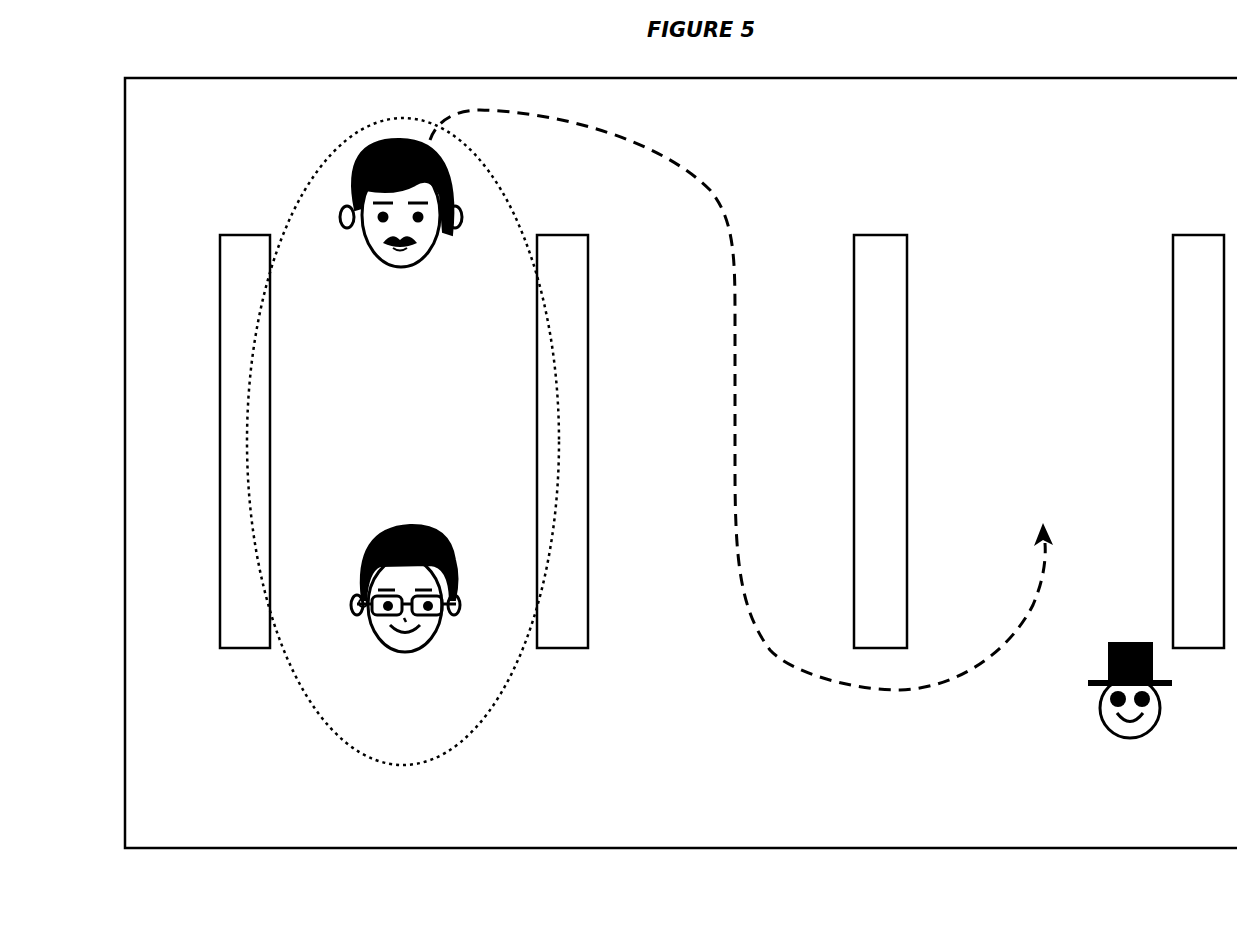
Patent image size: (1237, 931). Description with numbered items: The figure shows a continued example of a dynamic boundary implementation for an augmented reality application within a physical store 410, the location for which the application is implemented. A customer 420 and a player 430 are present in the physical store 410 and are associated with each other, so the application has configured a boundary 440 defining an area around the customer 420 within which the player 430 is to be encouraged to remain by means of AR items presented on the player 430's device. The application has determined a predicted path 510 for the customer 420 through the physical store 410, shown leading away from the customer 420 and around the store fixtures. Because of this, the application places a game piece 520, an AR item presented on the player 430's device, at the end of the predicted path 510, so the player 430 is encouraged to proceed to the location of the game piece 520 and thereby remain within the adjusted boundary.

The physical store 410 is at (1210, 120).
The customer 420 is at (418, 320).
The player 430 is at (418, 710).
The boundary 440 is at (312, 178).
The predicted path 510 is at (745, 192).
The game piece 520 is at (1145, 796).